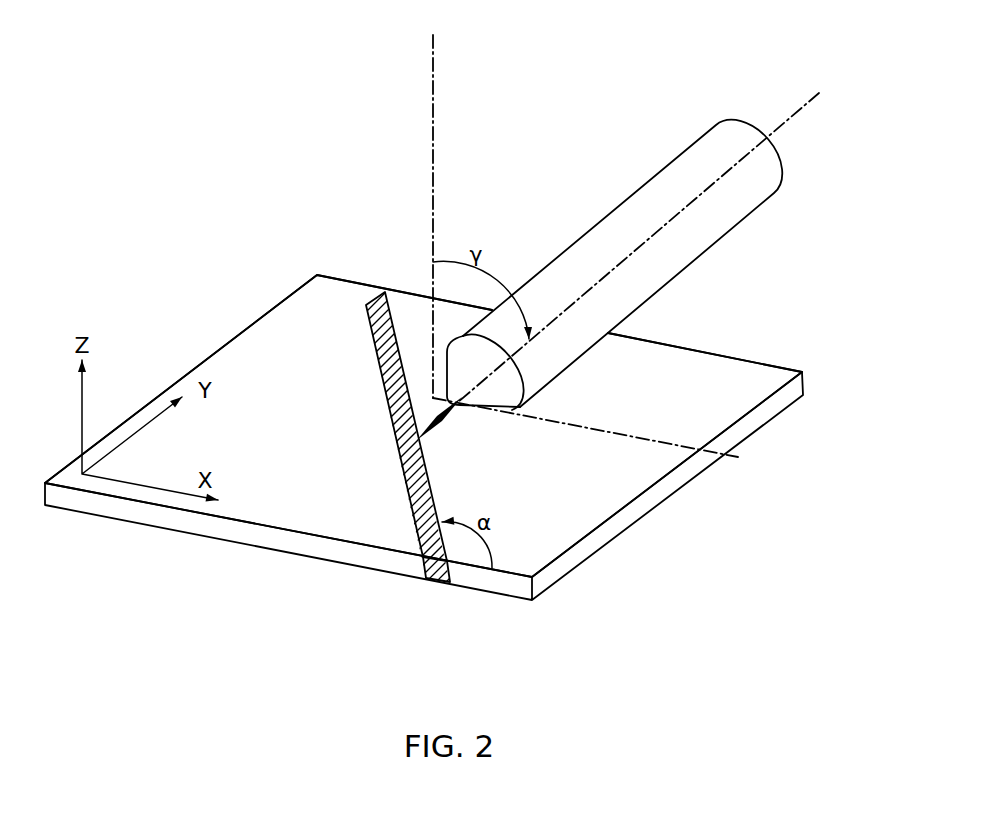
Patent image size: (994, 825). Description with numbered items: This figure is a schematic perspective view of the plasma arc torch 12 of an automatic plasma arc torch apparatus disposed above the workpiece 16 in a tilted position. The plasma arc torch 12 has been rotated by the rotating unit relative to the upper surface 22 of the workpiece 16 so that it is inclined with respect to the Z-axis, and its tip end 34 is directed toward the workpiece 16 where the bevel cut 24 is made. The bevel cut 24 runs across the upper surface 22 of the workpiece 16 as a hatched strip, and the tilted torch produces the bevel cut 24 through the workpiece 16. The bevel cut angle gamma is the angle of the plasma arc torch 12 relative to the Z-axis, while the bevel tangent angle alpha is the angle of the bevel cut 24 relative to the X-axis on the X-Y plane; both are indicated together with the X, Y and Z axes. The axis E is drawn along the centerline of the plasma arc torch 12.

The plasma arc torch 12 is at (607, 215).
The workpiece 16 is at (287, 293).
The upper surface 22 is at (257, 338).
The bevel cut 24 is at (400, 347).
The tip end 34 is at (455, 405).
The beam axis E is at (806, 103).